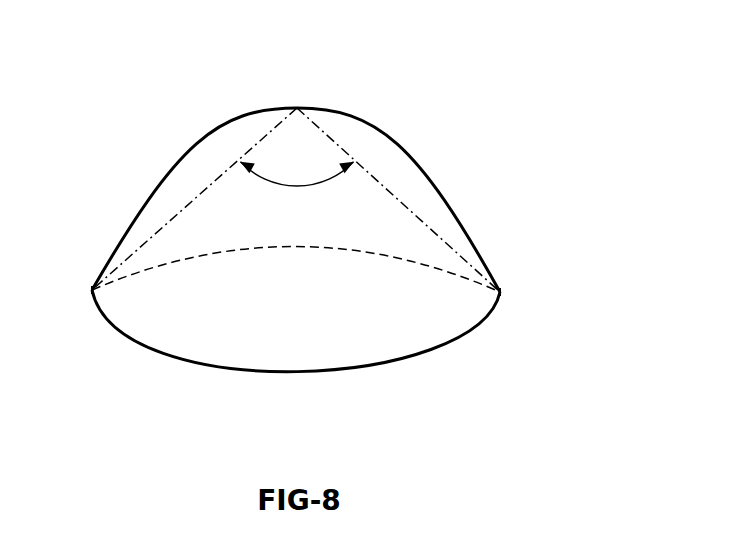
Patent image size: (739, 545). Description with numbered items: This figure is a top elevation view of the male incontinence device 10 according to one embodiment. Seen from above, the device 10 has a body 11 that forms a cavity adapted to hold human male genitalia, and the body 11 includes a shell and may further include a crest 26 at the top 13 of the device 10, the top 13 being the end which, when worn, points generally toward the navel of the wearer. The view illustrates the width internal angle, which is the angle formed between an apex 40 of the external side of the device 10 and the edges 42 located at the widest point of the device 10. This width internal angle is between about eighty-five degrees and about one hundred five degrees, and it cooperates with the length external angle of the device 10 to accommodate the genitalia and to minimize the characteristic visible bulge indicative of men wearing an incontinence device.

The male incontinence device 10 is at (293, 263).
The body 11 is at (160, 152).
The top 13 is at (262, 382).
The crest 26 is at (352, 330).
The apex 40 is at (291, 110).
The edges 42 is at (92, 290).